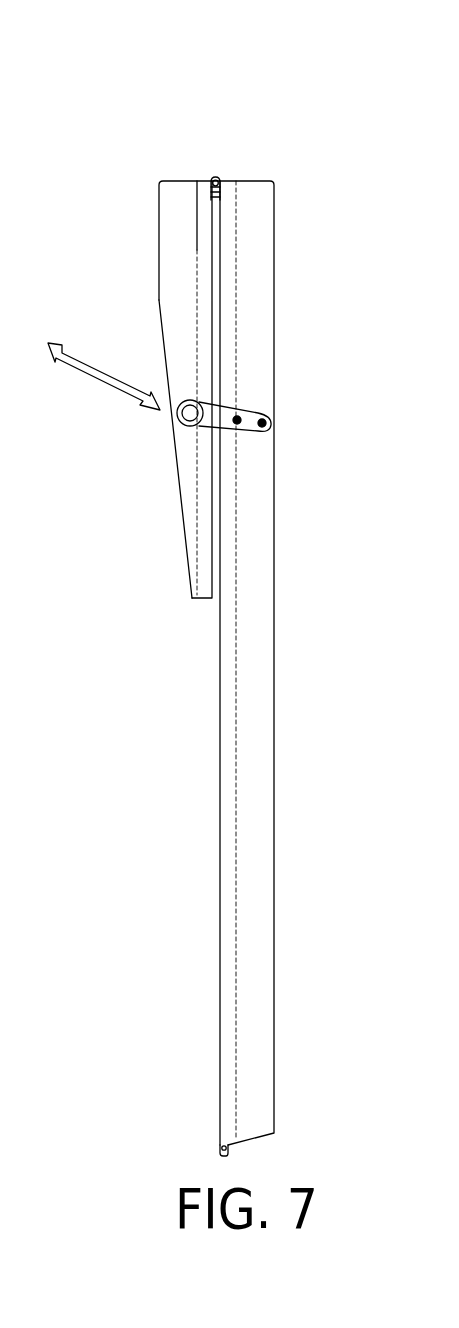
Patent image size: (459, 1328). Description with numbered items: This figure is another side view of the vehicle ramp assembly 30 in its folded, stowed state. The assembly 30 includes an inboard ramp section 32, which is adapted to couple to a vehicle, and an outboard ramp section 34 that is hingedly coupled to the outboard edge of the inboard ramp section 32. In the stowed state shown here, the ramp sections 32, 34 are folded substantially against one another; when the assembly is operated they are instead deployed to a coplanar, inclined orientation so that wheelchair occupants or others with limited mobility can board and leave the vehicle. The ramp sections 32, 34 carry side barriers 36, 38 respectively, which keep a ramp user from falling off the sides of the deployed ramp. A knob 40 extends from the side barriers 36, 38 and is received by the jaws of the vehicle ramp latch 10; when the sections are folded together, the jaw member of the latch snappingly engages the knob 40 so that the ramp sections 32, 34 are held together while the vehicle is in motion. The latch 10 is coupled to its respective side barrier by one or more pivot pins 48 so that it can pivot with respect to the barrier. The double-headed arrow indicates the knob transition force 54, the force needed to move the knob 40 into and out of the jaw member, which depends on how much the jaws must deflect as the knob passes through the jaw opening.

The vehicle ramp assembly 30 is at (247, 125).
The inboard ramp section 32 is at (274, 908).
The outboard ramp section 34 is at (162, 336).
The side barrier 36 is at (162, 222).
The side barrier 38 is at (262, 1012).
The knob 40 is at (183, 415).
The pivot pins 48 is at (240, 418).
The vehicle ramp latch 10 is at (218, 420).
The knob transition force 54 is at (92, 392).